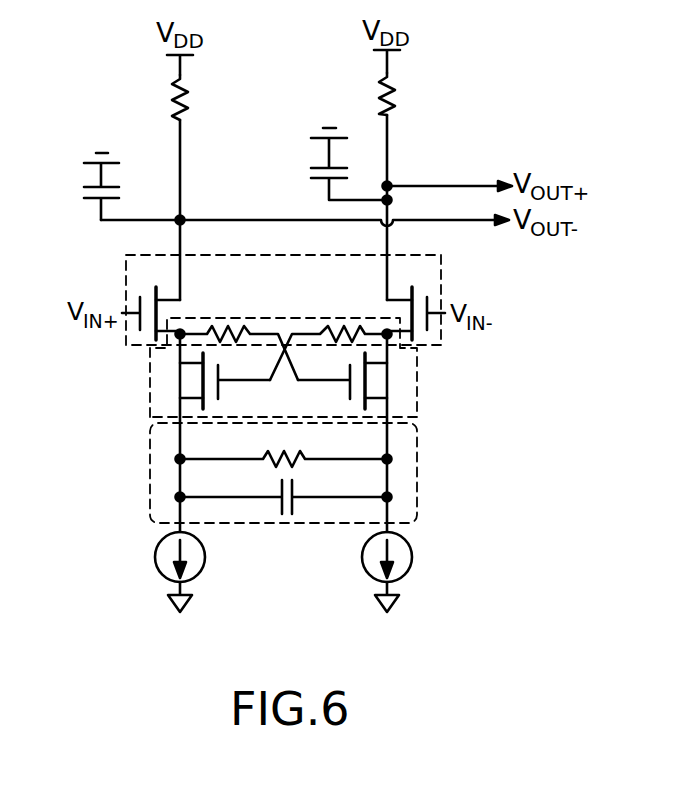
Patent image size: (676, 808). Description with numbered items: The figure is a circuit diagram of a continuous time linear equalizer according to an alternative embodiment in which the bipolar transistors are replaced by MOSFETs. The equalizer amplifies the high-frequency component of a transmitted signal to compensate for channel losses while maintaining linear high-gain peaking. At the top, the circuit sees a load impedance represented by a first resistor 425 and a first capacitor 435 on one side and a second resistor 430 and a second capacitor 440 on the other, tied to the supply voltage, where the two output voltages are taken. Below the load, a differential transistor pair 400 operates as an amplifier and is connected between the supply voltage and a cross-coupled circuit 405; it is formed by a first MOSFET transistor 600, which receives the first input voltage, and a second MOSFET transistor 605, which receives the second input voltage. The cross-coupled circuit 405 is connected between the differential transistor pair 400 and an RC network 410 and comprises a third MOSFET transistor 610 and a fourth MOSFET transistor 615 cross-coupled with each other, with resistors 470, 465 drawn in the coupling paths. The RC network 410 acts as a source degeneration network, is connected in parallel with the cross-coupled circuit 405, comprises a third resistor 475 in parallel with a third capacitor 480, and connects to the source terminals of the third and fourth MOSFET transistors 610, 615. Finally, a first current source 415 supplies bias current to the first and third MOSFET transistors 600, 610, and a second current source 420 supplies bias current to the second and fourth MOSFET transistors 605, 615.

The differential transistor pair 400 is at (441, 341).
The cross-coupled circuit 405 is at (417, 397).
The RC network 410 is at (418, 462).
The first current source 415 is at (156, 562).
The second current source 420 is at (412, 560).
The first resistor 425 is at (183, 100).
The second resistor 430 is at (392, 100).
The first capacitor 435 is at (96, 200).
The second capacitor 440 is at (312, 178).
The resistor 465 is at (342, 340).
The resistor 470 is at (218, 339).
The third resistor 475 is at (285, 452).
The third capacitor 480 is at (293, 484).
The first MOSFET transistor 600 is at (160, 303).
The second MOSFET transistor 605 is at (408, 307).
The third MOSFET transistor 610 is at (200, 379).
The fourth MOSFET transistor 615 is at (370, 381).